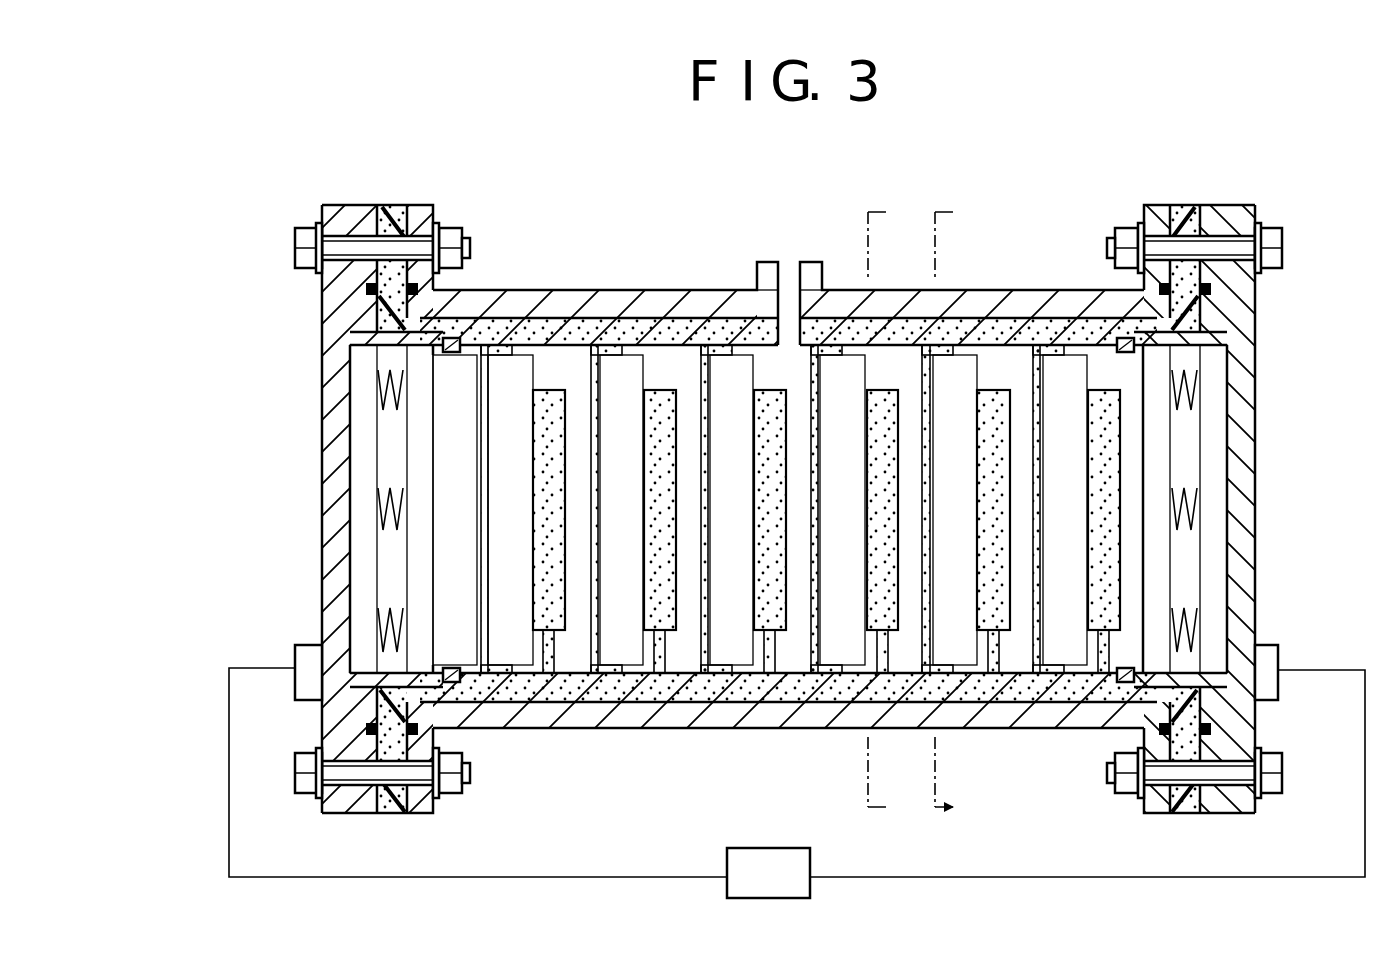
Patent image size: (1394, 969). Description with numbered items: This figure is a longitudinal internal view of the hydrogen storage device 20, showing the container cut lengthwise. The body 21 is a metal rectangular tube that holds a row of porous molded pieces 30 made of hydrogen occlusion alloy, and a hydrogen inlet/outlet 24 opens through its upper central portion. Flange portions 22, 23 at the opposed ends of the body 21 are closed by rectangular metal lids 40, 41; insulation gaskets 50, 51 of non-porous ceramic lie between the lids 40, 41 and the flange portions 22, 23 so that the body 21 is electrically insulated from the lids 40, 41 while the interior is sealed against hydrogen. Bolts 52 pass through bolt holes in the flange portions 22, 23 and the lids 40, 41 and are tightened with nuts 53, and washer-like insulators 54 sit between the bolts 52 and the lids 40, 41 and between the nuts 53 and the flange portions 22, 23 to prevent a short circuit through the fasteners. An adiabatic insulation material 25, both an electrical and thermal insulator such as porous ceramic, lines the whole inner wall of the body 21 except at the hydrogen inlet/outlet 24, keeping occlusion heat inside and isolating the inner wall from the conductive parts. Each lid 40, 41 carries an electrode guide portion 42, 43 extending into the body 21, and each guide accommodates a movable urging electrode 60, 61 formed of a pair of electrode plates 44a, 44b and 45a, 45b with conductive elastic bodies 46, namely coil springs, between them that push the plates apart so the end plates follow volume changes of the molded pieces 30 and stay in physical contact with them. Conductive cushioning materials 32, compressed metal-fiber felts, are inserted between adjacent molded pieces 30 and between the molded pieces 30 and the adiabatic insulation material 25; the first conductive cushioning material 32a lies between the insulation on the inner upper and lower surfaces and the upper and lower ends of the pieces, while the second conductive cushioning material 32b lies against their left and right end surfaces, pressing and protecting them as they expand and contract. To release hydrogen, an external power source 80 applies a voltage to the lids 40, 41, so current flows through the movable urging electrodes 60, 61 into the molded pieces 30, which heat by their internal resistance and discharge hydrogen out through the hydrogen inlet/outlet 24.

The hydrogen storage device 20 is at (678, 245).
The body 21 is at (685, 290).
The flange portion 22 is at (1150, 205).
The flange portion 23 is at (427, 205).
The hydrogen inlet/outlet 24 is at (768, 262).
The adiabatic insulation material 25 is at (640, 330).
The porous molded piece 30 is at (475, 509).
The conductive cushioning material 32 is at (800, 546).
The first conductive cushioning material 32a is at (1038, 345).
The second conductive cushioning material 32b is at (1092, 390).
The lid 40 is at (1235, 205).
The lid 41 is at (345, 205).
The electrode guide portion 42 is at (1122, 338).
The electrode guide portion 43 is at (448, 336).
The electrode plate 44a is at (1147, 437).
The electrode plate 44b is at (1212, 547).
The electrode plate 45a is at (420, 572).
The electrode plate 45b is at (365, 477).
The conductive elastic body 46 is at (380, 392).
The insulation gasket 50 is at (1185, 813).
The insulation gasket 51 is at (395, 813).
The bolt 52 is at (312, 222).
The nut 53 is at (465, 240).
The washer-like insulator 54 is at (436, 222).
The movable urging electrode 60 is at (1260, 509).
The movable urging electrode 61 is at (314, 509).
The external power source 80 is at (797, 771).